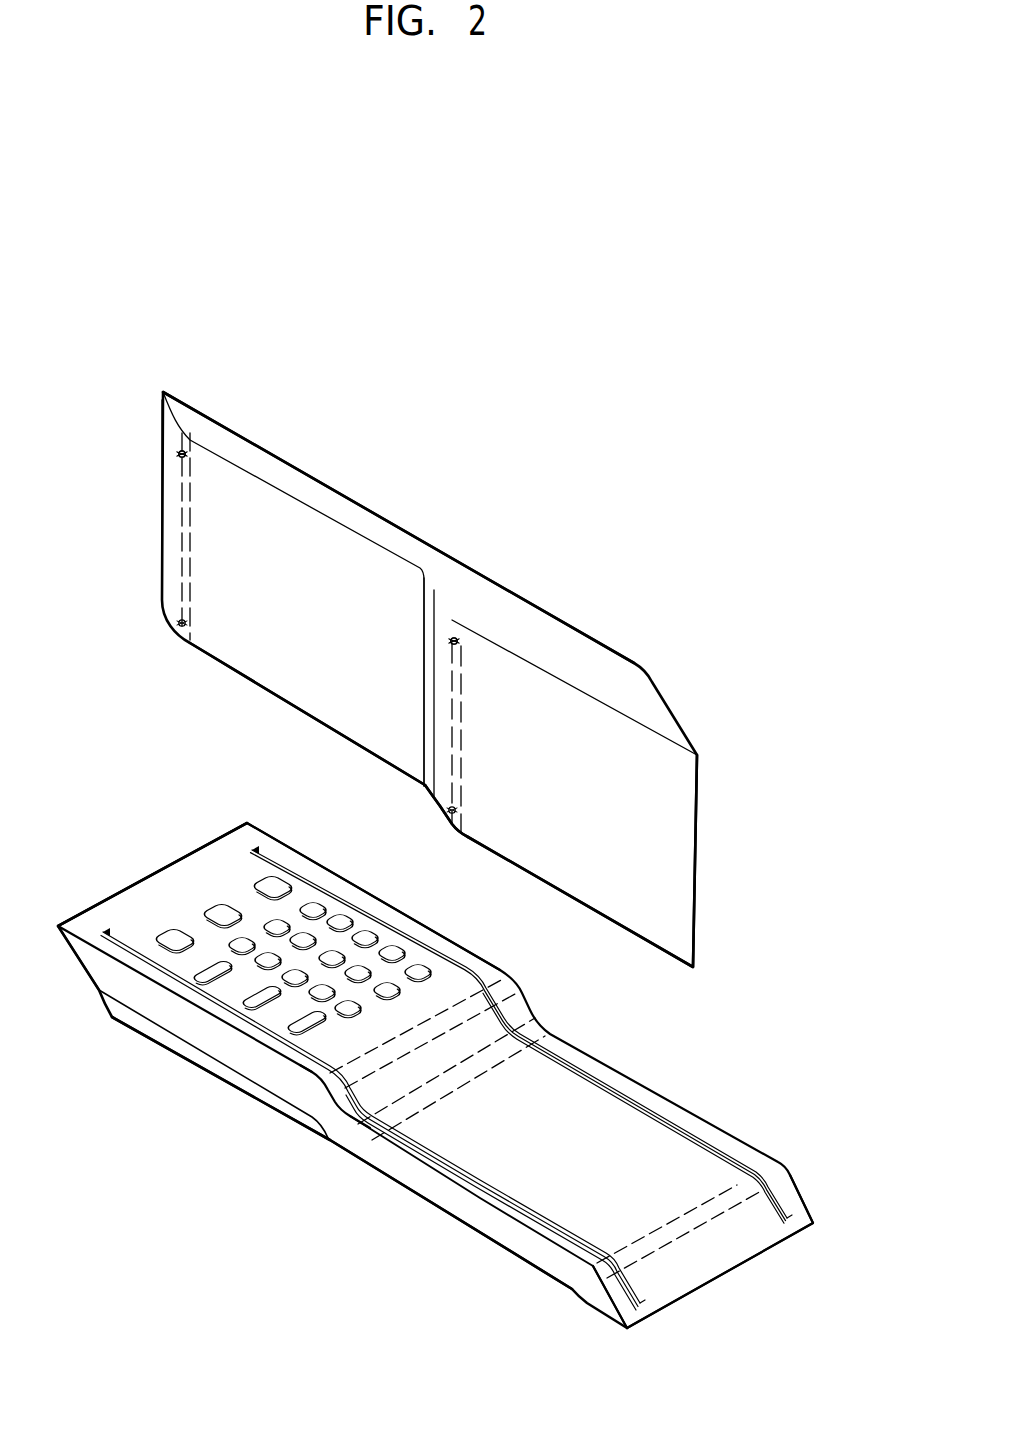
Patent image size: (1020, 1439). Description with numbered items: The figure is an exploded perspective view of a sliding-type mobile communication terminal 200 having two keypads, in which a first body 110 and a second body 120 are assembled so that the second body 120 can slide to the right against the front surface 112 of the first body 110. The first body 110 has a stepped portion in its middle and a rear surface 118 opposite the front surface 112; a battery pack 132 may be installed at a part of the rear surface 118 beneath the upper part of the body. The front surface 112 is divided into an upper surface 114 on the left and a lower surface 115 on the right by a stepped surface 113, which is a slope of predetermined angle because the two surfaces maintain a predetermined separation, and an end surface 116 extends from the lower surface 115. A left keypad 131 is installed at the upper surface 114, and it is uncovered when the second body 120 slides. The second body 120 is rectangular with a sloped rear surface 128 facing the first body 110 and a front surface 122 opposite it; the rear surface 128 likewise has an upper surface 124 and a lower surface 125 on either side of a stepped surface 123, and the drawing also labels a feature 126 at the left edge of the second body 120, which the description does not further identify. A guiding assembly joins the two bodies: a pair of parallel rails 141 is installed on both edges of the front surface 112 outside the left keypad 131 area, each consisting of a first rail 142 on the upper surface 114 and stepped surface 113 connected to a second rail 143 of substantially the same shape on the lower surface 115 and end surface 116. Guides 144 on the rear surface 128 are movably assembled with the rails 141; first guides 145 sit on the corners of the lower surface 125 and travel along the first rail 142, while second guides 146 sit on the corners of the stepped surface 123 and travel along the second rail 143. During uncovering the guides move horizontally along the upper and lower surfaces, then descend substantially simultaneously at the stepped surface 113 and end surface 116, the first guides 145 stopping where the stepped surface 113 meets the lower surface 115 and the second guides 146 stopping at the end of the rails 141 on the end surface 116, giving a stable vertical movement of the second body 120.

The mobile communication terminal 200 is at (716, 340).
The first body 110 is at (746, 1141).
The front surface 112 is at (115, 910).
The stepped surface 113 is at (338, 1080).
The upper surface 114 is at (180, 882).
The lower surface 115 is at (464, 1154).
The end surface 116 is at (756, 1248).
The rear surface 118 is at (144, 1037).
The second body 120 is at (680, 716).
The front surface 122 is at (203, 414).
The stepped surface 123 is at (446, 748).
The upper surface 124 is at (634, 907).
The lower surface 125 is at (334, 714).
The side guide of first display panel 126 is at (170, 492).
The rear surface 128 is at (230, 664).
The left keypad 131 is at (347, 915).
The battery pack 132 is at (208, 1062).
The rails 141 is at (600, 1083).
The first rail 142 is at (476, 974).
The second rail 143 is at (648, 1106).
The guides 144 is at (455, 640).
The first guides 145 is at (179, 453).
The second guides 146 is at (457, 636).